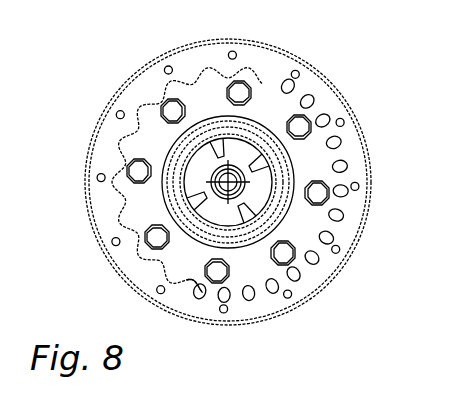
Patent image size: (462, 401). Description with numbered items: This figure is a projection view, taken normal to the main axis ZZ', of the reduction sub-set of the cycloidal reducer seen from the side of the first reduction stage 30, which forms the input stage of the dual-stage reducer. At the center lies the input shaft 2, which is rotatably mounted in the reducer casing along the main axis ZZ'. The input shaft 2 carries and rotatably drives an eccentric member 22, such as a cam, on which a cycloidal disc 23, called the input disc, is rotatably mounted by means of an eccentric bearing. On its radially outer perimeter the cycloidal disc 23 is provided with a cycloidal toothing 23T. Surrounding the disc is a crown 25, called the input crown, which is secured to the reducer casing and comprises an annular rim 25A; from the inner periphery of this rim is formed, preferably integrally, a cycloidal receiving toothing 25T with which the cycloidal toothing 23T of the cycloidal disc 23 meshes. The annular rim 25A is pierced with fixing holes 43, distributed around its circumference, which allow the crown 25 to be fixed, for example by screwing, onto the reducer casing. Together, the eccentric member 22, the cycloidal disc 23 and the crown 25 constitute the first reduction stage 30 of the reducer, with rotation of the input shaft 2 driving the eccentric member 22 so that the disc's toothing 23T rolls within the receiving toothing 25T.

The first reduction stage 30 is at (336, 62).
The crown 25 is at (280, 48).
The annular rim 25A is at (327, 108).
The receiving toothing 25T is at (345, 147).
The fixing holes 43 is at (233, 51).
The cycloidal disc 23 is at (152, 137).
The cycloidal toothing 23T is at (192, 290).
The eccentric member 22 is at (187, 181).
The input shaft 2 is at (208, 201).
The main axis ZZ' is at (314, 229).